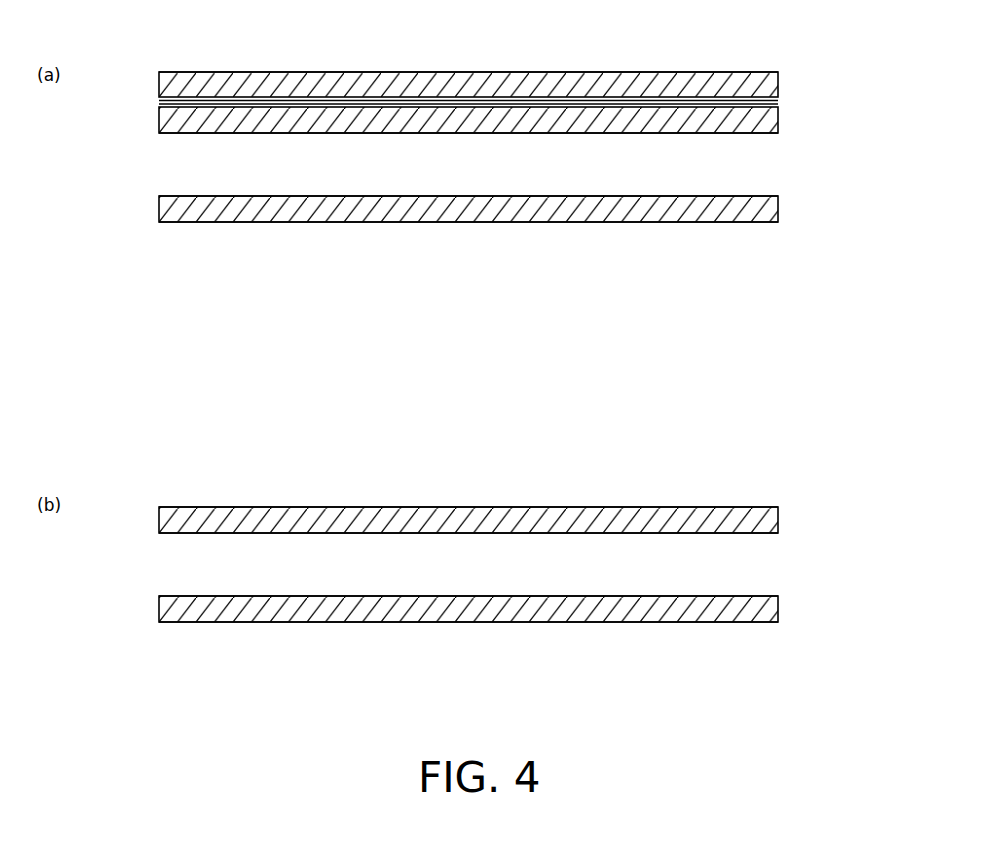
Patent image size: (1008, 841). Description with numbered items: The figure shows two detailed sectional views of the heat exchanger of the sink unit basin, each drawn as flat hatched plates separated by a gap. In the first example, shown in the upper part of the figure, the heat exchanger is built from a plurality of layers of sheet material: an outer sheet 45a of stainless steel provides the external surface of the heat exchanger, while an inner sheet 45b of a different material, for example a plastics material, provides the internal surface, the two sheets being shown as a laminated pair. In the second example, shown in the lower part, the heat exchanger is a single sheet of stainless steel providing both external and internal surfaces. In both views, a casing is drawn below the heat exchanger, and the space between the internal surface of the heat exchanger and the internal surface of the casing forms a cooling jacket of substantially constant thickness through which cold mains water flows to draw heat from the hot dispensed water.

The outer sheet 45a is at (500, 51).
The inner sheet 45b is at (501, 141).